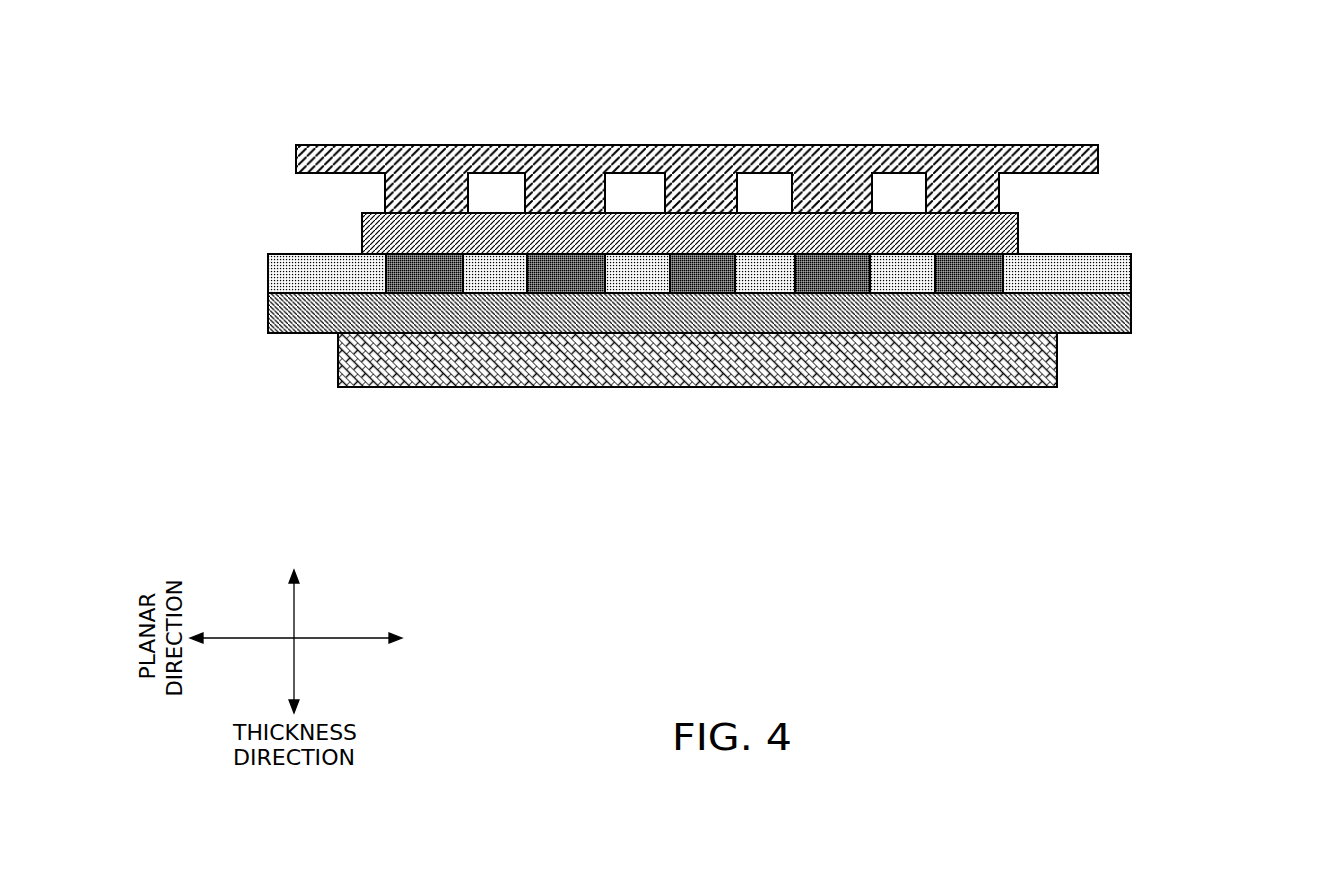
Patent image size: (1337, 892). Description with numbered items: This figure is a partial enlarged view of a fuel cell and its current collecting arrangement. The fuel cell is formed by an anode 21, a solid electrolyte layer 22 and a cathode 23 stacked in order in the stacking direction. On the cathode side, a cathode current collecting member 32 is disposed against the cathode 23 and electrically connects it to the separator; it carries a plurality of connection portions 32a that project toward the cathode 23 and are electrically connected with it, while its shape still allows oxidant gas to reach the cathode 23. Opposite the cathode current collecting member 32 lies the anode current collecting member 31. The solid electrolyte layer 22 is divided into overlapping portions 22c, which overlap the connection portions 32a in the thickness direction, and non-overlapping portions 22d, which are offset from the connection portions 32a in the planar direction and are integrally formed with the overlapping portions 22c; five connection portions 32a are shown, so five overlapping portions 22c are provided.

The anode 21 is at (1131, 312).
The solid electrolyte layer 22 is at (699, 426).
The overlapping portion 22c is at (704, 379).
The non-overlapping portion 22d is at (357, 274).
The cathode 23 is at (1018, 228).
The anode current collecting member 31 is at (1057, 363).
The cathode current collecting member 32 is at (1098, 159).
The connection portion 32a is at (380, 196).